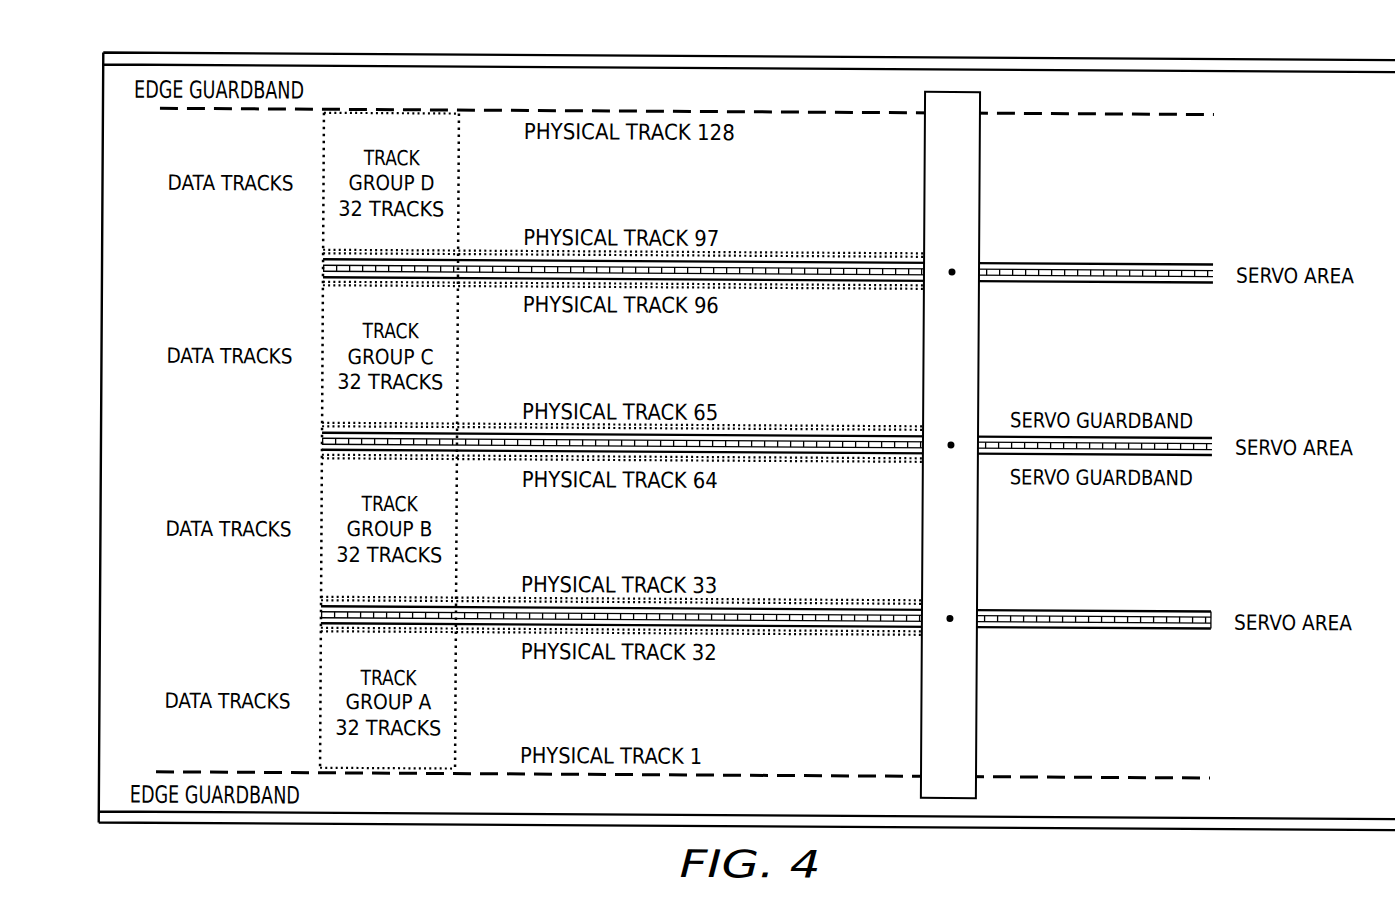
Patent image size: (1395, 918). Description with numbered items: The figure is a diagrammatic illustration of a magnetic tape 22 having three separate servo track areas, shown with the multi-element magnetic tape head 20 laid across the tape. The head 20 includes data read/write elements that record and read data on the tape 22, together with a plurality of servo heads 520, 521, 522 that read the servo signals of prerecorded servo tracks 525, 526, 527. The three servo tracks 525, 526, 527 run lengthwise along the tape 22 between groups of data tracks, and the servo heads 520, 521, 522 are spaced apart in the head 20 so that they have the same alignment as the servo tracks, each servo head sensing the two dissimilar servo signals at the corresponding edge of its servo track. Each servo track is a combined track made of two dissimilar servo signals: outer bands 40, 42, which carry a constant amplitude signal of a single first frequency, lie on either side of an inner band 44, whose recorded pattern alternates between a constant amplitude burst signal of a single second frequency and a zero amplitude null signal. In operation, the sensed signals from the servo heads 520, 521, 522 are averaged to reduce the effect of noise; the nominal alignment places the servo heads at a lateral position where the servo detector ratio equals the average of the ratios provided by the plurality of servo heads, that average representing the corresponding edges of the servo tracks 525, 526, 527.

The magnetic tape 22 is at (980, 55).
The multi-element magnetic tape head 20 is at (978, 165).
The servo track 525 is at (1109, 244).
The servo track 526 is at (1203, 410).
The servo track 527 is at (1172, 592).
The servo head 520 is at (951, 267).
The servo head 521 is at (951, 447).
The servo head 522 is at (951, 621).
The outer band 40 is at (1100, 608).
The outer band 42 is at (1103, 626).
The inner band 44 is at (1212, 617).